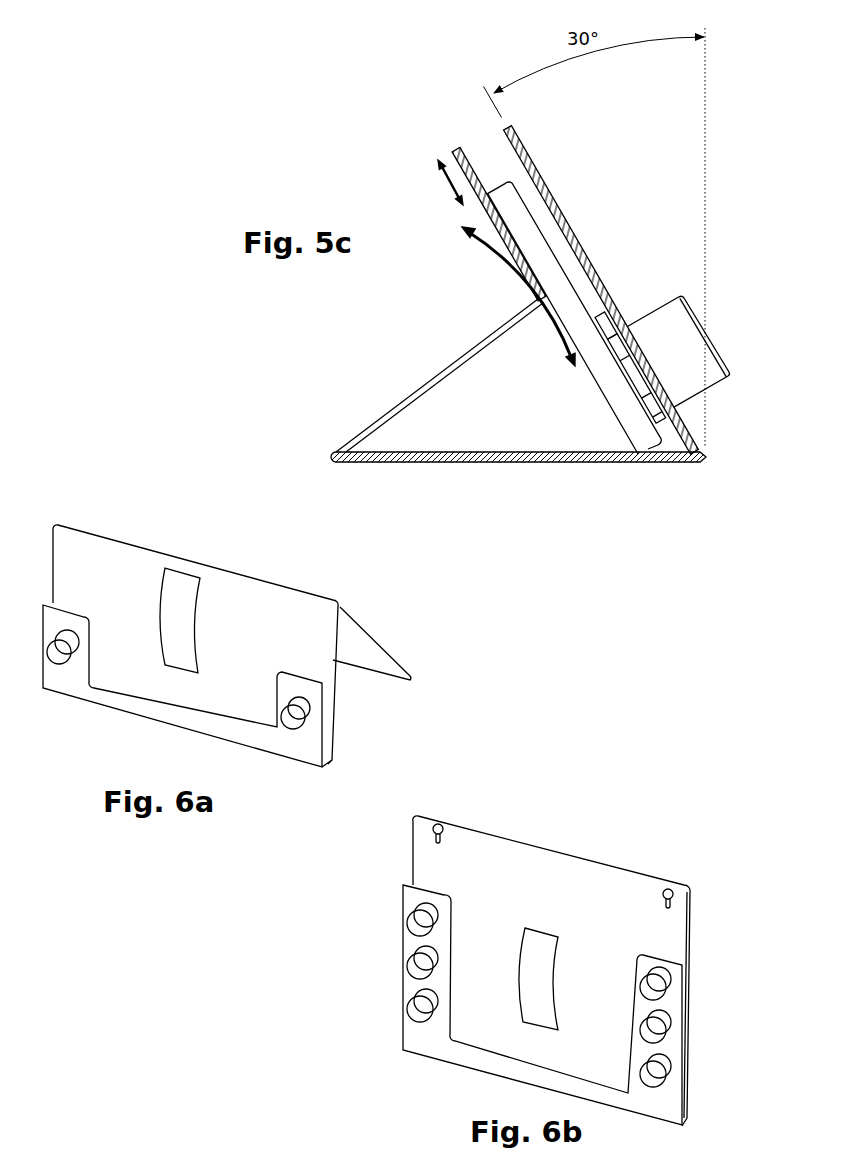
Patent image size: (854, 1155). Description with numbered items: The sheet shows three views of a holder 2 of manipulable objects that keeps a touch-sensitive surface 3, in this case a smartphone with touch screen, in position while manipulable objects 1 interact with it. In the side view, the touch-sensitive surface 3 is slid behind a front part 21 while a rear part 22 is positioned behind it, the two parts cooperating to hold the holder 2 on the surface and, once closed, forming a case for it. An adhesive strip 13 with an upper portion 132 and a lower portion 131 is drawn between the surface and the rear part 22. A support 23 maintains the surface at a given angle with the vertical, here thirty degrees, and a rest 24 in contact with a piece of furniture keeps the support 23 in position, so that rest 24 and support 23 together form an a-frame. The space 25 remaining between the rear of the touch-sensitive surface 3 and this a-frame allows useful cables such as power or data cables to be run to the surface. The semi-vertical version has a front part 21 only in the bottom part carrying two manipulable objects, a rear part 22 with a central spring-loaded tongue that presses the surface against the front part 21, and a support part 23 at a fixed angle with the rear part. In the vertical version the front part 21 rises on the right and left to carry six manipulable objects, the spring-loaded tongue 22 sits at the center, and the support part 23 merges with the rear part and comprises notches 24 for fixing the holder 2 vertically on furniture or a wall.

In FIG. 5c, the manipulable object 1 is at (722, 361).
In FIG. 6a, the holder of manipulable objects 2 is at (142, 517).
In FIG. 6b, the holder of manipulable objects 2 is at (606, 839).
In FIG. 5c, the touch-sensitive surface 3 is at (504, 179).
In FIG. 5c, the adhesive strip 13 is at (648, 389).
In FIG. 5c, the adhesive strip lower part 131 is at (662, 424).
In FIG. 5c, the adhesive strip upper part 132 is at (607, 331).
In FIG. 5c, the front part 21 is at (558, 195).
In FIG. 6a, the front part 21 is at (72, 685).
In FIG. 6b, the front part 21 is at (430, 1050).
In FIG. 5c, the rear part 22 is at (464, 151).
In FIG. 6a, the rear part 22 is at (181, 575).
In FIG. 6b, the rear part 22 is at (556, 972).
In FIG. 5c, the support 23 is at (417, 379).
In FIG. 6a, the support 23 is at (374, 626).
In FIG. 6b, the support 23 is at (517, 876).
In FIG. 5c, the rest 24 is at (473, 465).
In FIG. 6b, the rest 24 is at (684, 907).
In FIG. 5c, the space 25 is at (538, 345).